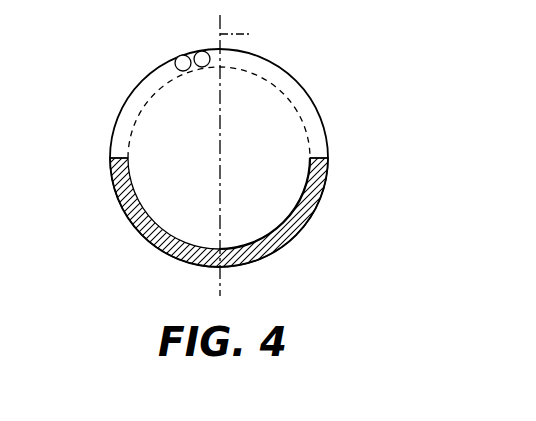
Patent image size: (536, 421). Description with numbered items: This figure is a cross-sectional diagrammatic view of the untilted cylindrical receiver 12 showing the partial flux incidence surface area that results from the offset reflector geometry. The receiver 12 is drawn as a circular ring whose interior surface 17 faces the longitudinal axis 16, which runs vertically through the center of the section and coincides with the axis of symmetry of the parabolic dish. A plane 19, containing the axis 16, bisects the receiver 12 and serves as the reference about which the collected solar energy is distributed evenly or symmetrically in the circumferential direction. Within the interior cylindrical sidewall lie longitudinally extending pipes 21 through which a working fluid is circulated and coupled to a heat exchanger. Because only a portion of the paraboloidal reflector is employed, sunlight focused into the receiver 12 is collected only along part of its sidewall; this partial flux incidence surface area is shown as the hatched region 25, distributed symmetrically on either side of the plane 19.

The cylindrical receiver 12 is at (300, 86).
The axis 16 is at (220, 158).
The interior surface 17 is at (130, 102).
The plane 19 is at (252, 34).
The longitudinally extending pipes 21 is at (200, 68).
The partial flux incidence surface area 25 is at (327, 166).